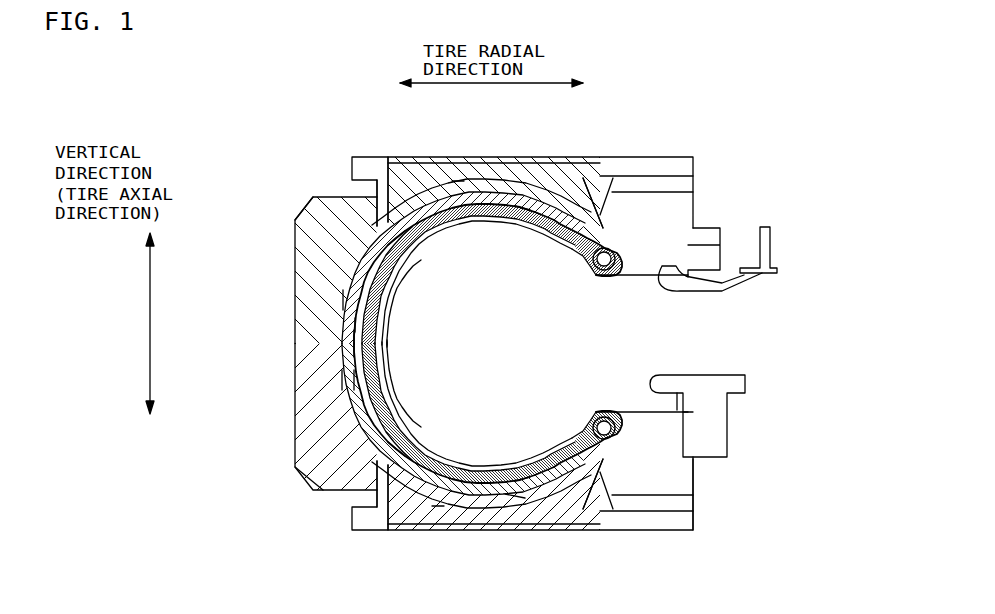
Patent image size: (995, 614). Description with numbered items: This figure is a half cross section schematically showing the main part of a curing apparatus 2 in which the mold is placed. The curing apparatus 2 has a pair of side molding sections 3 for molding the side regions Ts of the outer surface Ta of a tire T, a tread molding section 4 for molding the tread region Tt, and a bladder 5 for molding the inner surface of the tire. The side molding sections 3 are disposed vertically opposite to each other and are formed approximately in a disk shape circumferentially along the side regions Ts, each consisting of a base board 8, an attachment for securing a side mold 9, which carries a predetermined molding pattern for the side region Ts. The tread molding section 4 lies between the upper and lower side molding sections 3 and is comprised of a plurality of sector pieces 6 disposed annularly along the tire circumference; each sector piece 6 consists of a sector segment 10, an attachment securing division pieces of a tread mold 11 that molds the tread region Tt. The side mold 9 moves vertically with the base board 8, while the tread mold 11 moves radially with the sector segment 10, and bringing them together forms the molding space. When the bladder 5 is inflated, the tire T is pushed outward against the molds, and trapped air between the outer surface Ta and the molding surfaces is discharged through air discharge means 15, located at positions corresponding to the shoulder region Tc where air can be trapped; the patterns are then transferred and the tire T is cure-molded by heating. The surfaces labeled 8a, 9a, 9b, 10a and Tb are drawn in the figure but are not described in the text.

The curing apparatus 2 is at (219, 107).
The side molding section 3 is at (622, 157).
The tread molding section 4 is at (291, 222).
The bladder 5 is at (525, 215).
The sector piece 6 is at (294, 468).
The base board 8 is at (413, 200).
The inner surface of sidewall plate 8a is at (515, 484).
The side mold 9 is at (500, 190).
The molding surface of bead ring 9a is at (473, 205).
The vent portion of bead ring 9b is at (458, 180).
The sector segment 10 is at (312, 422).
The inner surface of segment 10a is at (346, 300).
The tread mold 11 is at (341, 380).
The air discharge means 15 is at (376, 212).
The tire T is at (356, 283).
The outer surface of the tire Ta is at (356, 325).
The inner liner of tire Tb is at (384, 353).
The shoulder region Tc is at (397, 250).
The tread region Tt is at (352, 345).
The side region Ts is at (523, 203).